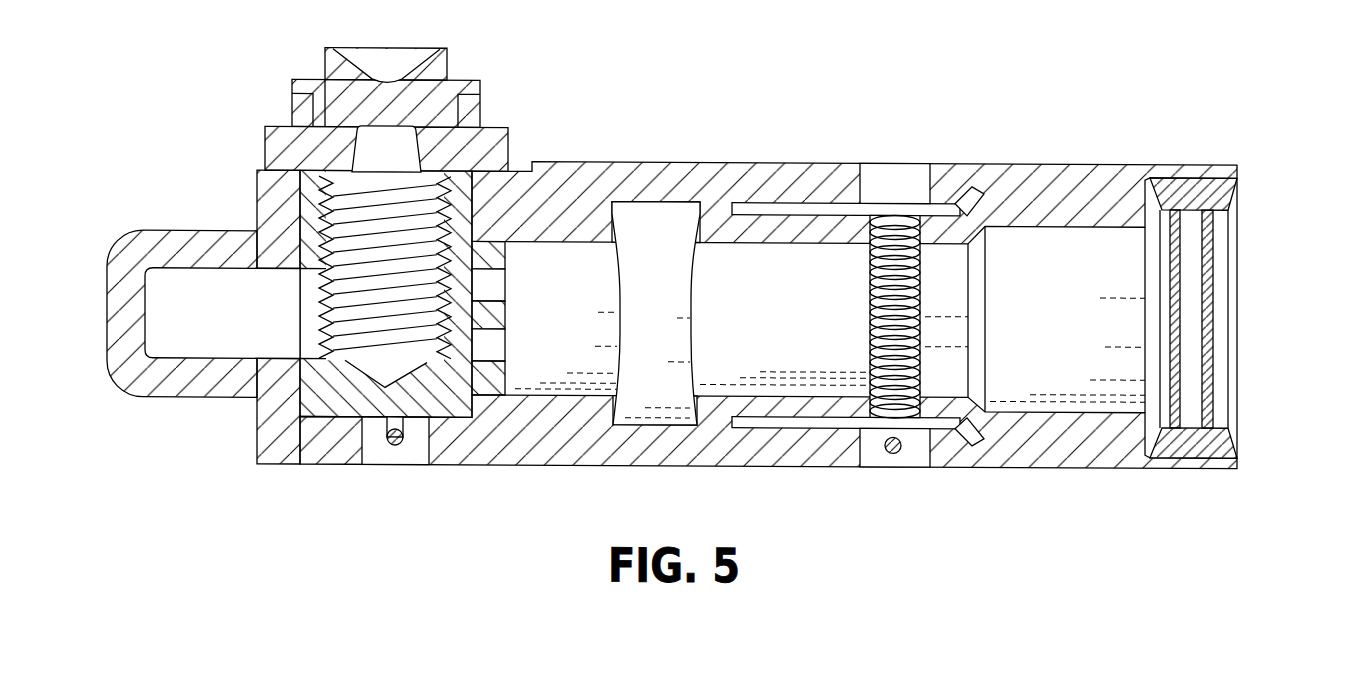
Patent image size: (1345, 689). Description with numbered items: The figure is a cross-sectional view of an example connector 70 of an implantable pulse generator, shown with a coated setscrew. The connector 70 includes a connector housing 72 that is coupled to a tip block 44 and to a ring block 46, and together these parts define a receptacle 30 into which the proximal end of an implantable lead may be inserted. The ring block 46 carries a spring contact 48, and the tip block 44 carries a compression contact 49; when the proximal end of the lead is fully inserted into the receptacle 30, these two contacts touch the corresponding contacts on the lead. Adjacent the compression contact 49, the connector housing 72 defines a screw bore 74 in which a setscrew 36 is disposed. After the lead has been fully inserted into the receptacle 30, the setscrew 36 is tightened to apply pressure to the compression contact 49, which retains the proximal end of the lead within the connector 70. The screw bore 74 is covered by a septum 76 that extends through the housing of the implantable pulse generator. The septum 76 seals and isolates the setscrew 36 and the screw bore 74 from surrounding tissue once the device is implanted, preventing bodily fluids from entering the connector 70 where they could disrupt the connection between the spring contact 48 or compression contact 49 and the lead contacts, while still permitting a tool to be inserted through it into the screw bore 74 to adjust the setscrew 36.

The receptacle 30 is at (1193, 317).
The setscrew 36 is at (383, 192).
The tip block 44 is at (335, 405).
The ring block 46 is at (907, 209).
The spring contact 48 is at (890, 414).
The compression contact 49 is at (327, 284).
The connector 70 is at (1122, 116).
The connector housing 72 is at (658, 166).
The screw bore 74 is at (316, 185).
The septum 76 is at (510, 141).